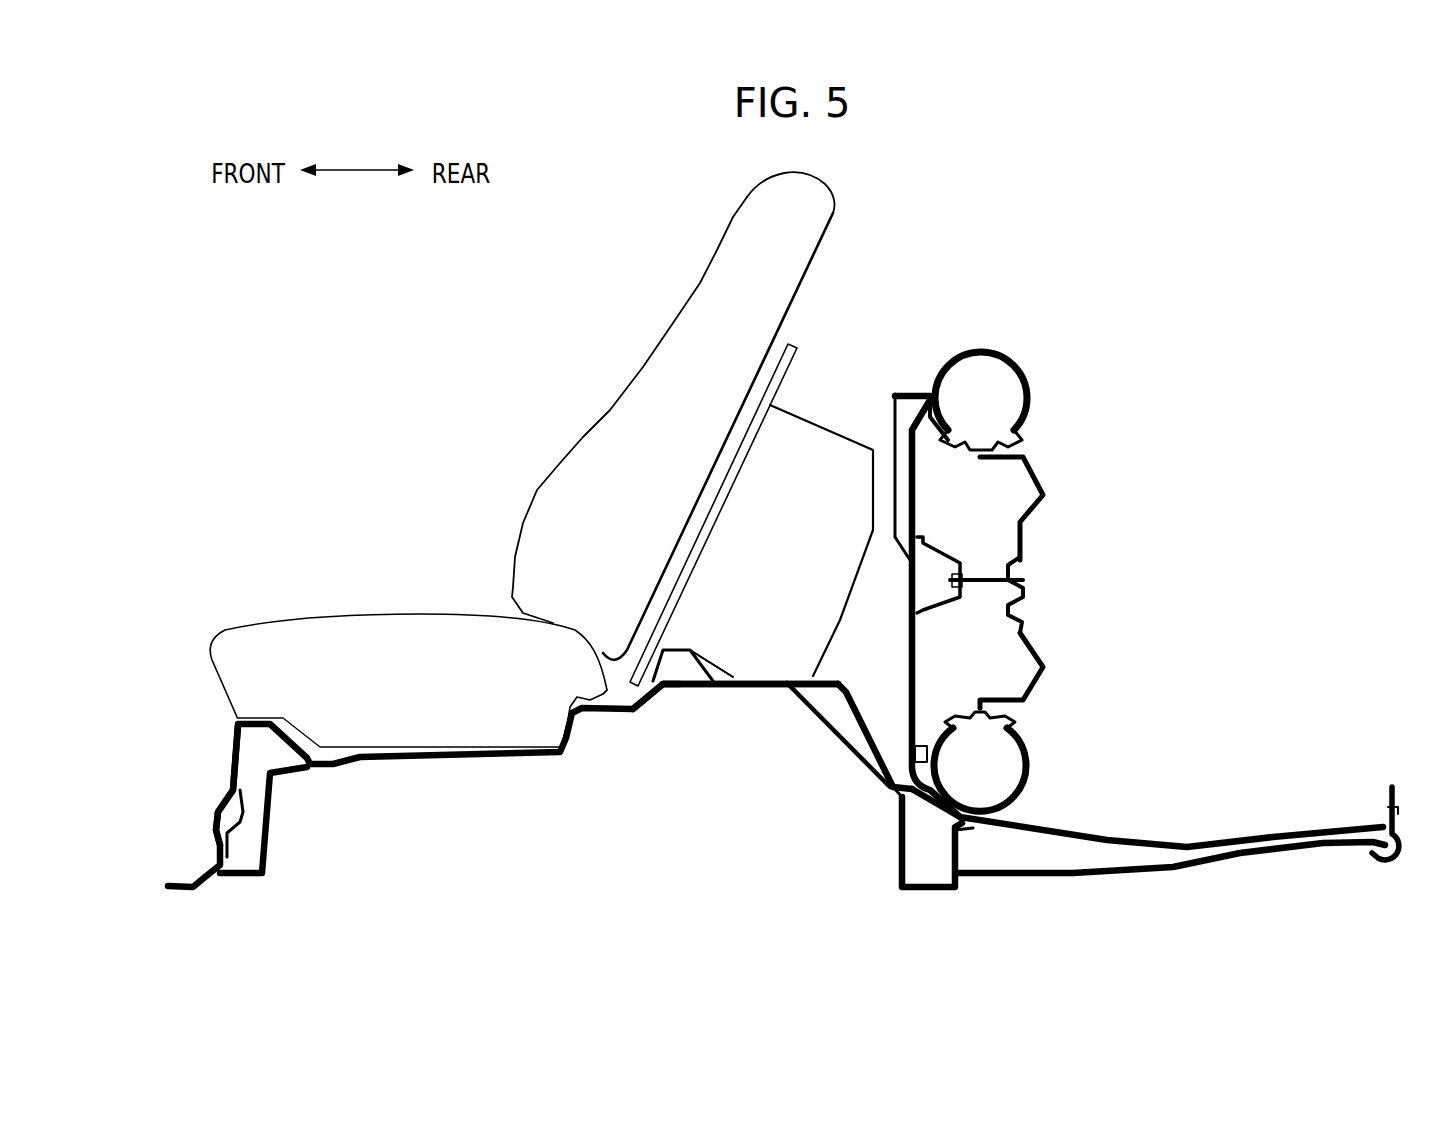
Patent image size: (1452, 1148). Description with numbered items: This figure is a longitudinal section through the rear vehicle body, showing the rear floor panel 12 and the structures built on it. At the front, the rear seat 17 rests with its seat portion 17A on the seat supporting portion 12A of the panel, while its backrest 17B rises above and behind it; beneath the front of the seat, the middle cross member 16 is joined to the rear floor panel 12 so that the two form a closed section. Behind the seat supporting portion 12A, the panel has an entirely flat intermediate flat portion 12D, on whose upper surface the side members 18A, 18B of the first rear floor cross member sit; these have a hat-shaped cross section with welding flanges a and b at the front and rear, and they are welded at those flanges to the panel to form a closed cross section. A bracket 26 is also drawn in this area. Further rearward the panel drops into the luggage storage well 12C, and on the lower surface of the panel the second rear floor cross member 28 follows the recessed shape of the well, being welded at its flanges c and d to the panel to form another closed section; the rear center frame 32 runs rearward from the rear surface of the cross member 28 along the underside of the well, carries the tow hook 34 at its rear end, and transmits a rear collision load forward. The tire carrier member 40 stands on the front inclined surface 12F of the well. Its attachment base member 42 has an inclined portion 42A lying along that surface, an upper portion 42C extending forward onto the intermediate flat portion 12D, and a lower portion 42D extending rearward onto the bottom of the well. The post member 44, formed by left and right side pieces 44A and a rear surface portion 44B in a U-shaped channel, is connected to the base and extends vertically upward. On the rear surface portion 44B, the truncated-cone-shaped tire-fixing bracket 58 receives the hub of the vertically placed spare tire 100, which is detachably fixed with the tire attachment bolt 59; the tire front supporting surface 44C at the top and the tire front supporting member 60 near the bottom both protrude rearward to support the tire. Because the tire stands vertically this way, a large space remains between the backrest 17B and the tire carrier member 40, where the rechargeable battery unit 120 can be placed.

The rear floor panel 12 is at (775, 755).
The seat supporting portion 12A is at (503, 785).
The luggage storage well 12C is at (1171, 803).
The intermediate flat portion 12D is at (750, 653).
The front inclined surface 12F is at (838, 748).
The middle cross member 16 is at (261, 753).
The rear seat 17 is at (522, 461).
The seat portion 17A is at (408, 654).
The backrest 17B is at (654, 416).
The left side member 18A is at (748, 596).
The right side member 18B is at (711, 663).
The bracket 26 is at (666, 721).
The second rear floor cross member 28 is at (932, 872).
The rear center frame 32 is at (1171, 882).
The tow hook 34 is at (1386, 853).
The tire carrier member 40 is at (1027, 599).
The attachment base member 42 is at (929, 611).
The inclined portion 42A is at (875, 731).
The upper portion 42C is at (821, 541).
The lower portion 42D is at (1000, 778).
The post member 44 is at (943, 559).
The side piece 44A is at (901, 605).
The rear surface portion 44B is at (981, 680).
The tire front supporting surface 44C is at (986, 430).
The tire-fixing bracket 58 is at (938, 553).
The tire attachment bolt 59 is at (986, 552).
The tire front supporting member 60 is at (932, 713).
The spare tire 100 is at (1029, 581).
The rechargeable battery unit 120 is at (738, 513).
The welding flange a is at (620, 644).
The welding flange b is at (685, 641).
The welding flange c is at (883, 826).
The welding flange d is at (983, 848).